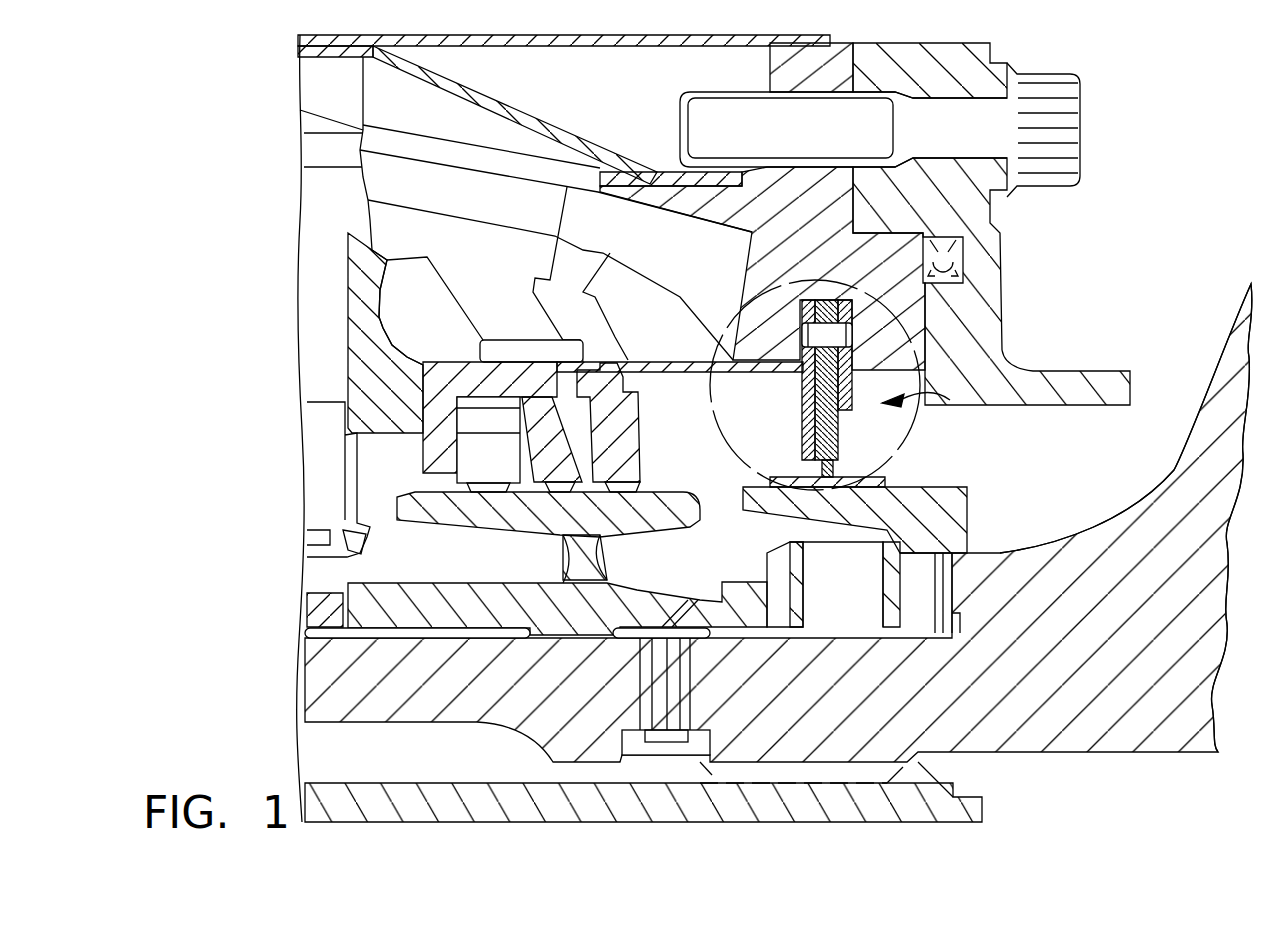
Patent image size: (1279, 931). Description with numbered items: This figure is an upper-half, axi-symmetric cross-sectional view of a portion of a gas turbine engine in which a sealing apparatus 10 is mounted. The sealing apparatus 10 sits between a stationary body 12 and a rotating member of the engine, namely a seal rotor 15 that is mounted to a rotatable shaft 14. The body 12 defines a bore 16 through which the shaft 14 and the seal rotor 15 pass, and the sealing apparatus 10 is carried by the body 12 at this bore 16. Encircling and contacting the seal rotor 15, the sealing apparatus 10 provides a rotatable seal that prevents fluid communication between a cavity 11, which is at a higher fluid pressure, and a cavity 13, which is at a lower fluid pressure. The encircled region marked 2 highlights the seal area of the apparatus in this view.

The detail region 2 is at (925, 452).
The sealing apparatus 10 is at (935, 405).
The cavity 11 is at (1087, 473).
The body 12 is at (887, 247).
The cavity 13 is at (683, 434).
The shaft 14 is at (537, 687).
The seal rotor 15 is at (745, 492).
The bore 16 is at (758, 390).